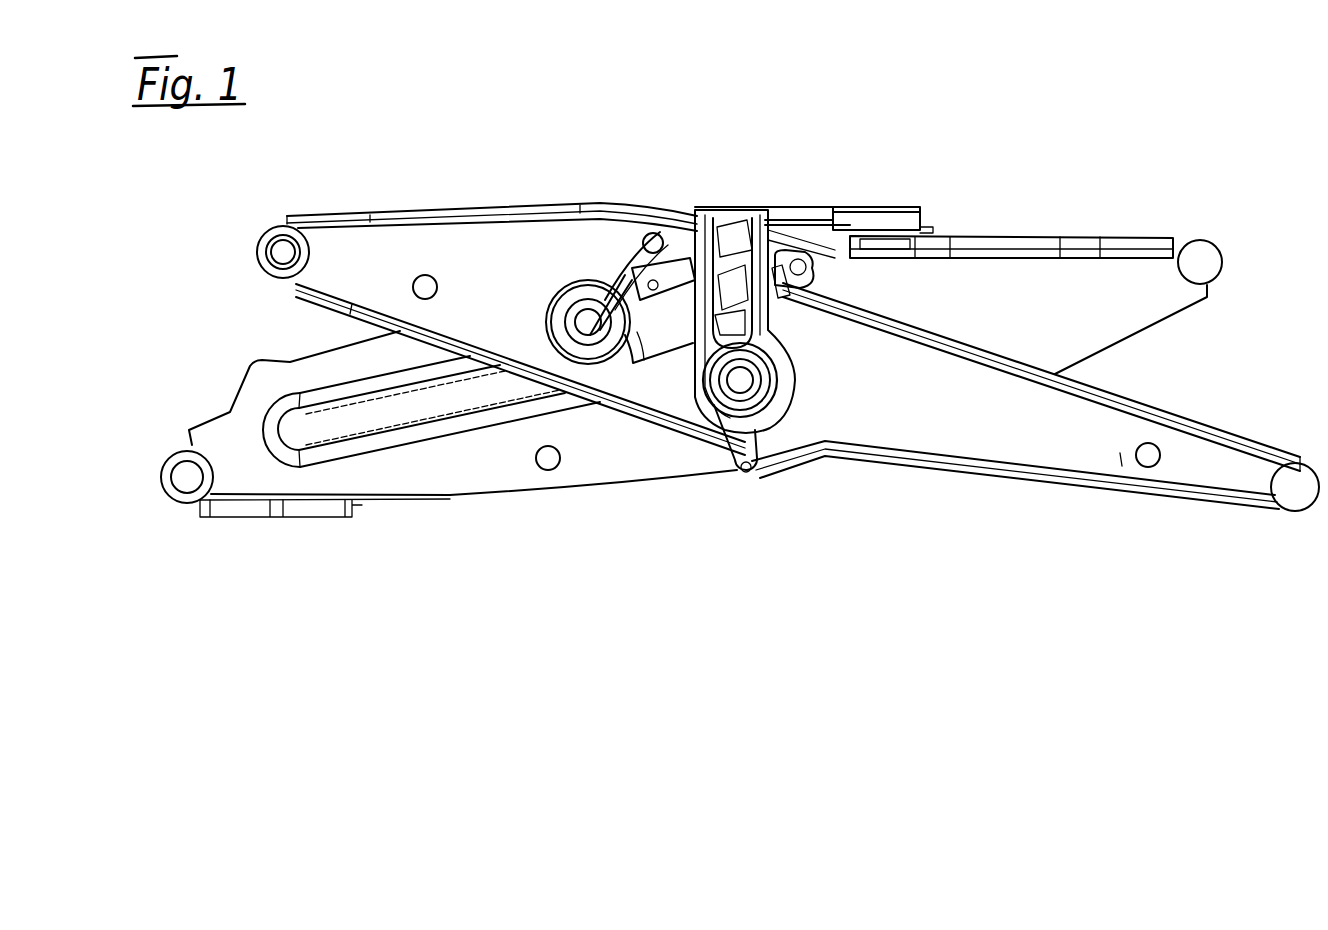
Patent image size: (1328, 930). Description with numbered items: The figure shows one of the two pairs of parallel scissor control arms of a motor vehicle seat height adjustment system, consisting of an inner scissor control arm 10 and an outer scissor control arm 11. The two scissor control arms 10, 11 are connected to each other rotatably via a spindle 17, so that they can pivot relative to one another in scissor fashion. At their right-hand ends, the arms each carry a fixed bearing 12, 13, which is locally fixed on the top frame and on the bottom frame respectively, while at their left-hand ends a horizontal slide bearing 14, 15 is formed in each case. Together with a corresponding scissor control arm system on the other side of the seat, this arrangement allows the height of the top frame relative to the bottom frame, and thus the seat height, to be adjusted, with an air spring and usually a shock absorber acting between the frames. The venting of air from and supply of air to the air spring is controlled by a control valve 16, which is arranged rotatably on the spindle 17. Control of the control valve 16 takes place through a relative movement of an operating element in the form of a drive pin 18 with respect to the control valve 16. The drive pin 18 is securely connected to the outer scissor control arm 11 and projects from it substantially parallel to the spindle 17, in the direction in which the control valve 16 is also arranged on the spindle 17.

The inner scissor control arm 10 is at (1003, 277).
The outer scissor control arm 11 is at (1020, 437).
The fixed bearing 12 is at (1203, 262).
The fixed bearing 13 is at (1298, 500).
The horizontal slide bearing 14 is at (283, 252).
The horizontal slide bearing 15 is at (187, 480).
The control valve 16 is at (683, 293).
The spindle 17 is at (740, 380).
The drive pin 18 is at (681, 230).